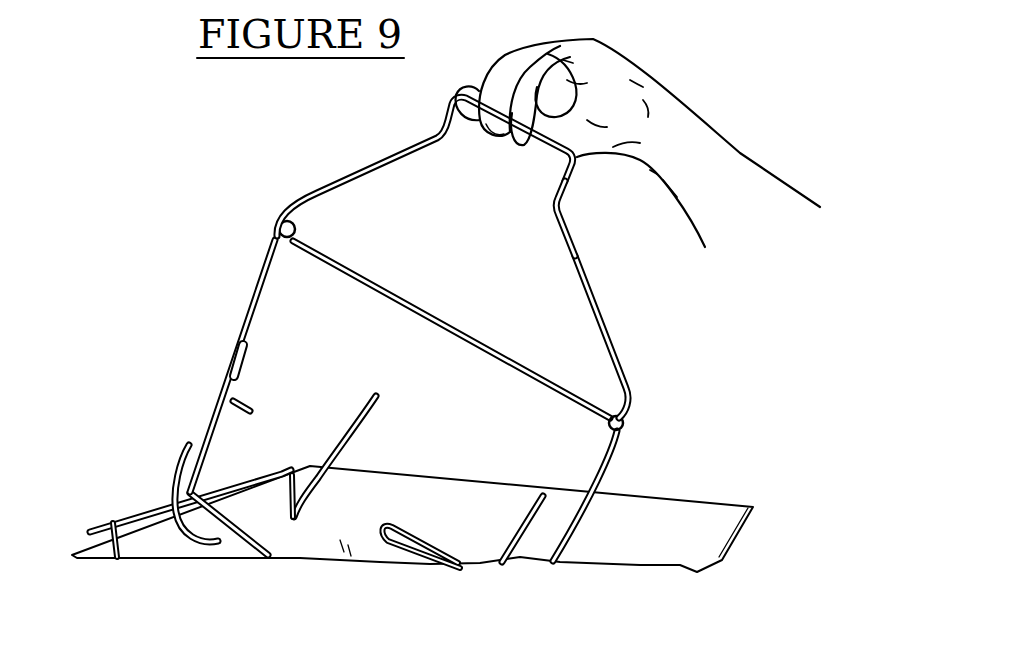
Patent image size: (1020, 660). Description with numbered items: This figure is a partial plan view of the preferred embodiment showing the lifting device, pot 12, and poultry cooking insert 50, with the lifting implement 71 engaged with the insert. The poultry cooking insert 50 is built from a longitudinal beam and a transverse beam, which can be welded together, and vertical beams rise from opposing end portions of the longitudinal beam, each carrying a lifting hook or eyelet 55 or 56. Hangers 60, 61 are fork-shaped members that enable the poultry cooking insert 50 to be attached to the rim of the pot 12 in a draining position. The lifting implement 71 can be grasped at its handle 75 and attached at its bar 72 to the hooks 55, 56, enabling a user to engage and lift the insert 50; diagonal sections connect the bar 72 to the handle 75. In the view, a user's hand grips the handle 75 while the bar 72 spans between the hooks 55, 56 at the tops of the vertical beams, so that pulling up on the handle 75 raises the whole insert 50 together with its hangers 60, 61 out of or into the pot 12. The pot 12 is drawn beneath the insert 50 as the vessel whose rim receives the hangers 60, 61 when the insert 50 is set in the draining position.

The tray base 12 is at (720, 517).
The poultry cooking insert 50 is at (228, 366).
The lifting hook or eyelet 55 is at (276, 232).
The lifting hook or eyelet 56 is at (622, 431).
The hanger 60 is at (110, 553).
The hanger 61 is at (296, 470).
The lifting implement 71 is at (603, 312).
The bar 72 is at (468, 340).
The handle 75 is at (553, 197).